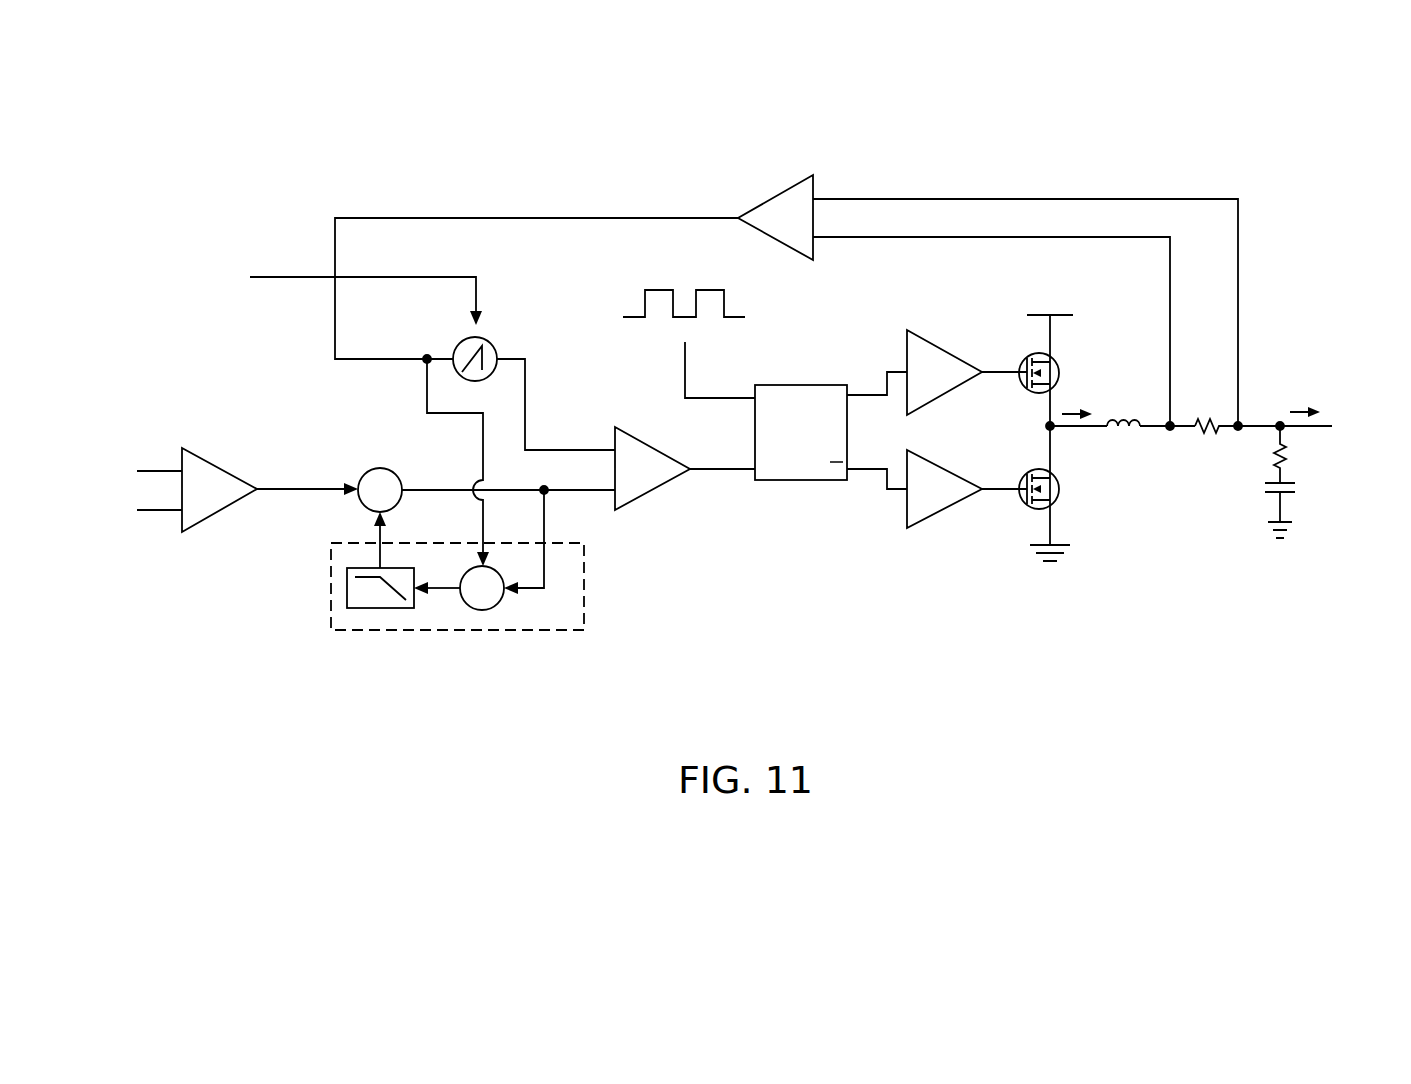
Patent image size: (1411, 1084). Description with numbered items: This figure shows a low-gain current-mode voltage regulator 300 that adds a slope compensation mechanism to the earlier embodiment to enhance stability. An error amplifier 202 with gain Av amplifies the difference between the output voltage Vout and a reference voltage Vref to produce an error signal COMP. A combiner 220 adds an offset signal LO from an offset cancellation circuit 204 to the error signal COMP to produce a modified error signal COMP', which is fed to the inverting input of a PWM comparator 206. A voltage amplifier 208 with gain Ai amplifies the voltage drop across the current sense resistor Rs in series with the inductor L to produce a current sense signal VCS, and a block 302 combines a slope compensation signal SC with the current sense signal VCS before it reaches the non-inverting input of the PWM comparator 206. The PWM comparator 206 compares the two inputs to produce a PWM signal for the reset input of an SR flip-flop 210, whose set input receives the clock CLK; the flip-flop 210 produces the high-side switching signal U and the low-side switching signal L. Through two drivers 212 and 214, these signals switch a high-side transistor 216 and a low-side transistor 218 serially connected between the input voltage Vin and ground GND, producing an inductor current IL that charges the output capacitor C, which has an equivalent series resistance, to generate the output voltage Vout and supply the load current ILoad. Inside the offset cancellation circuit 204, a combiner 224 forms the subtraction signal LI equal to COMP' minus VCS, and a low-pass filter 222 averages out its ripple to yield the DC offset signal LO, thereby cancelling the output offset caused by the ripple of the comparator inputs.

The error amplifier 202 is at (221, 467).
The offset cancellation circuit 204 is at (586, 560).
The PWM comparator 206 is at (656, 440).
The voltage amplifier 208 is at (776, 196).
The SR flip-flop 210 is at (791, 385).
The driver 212 is at (945, 350).
The driver 214 is at (945, 510).
The high-side transistor 216 is at (1072, 350).
The low-side transistor 218 is at (1068, 504).
The combiner 220 is at (392, 472).
The low-pass filter 222 is at (414, 568).
The combiner 224 is at (498, 570).
The voltage regulator 300 is at (1275, 146).
The slope compensation combiner 302 is at (491, 340).